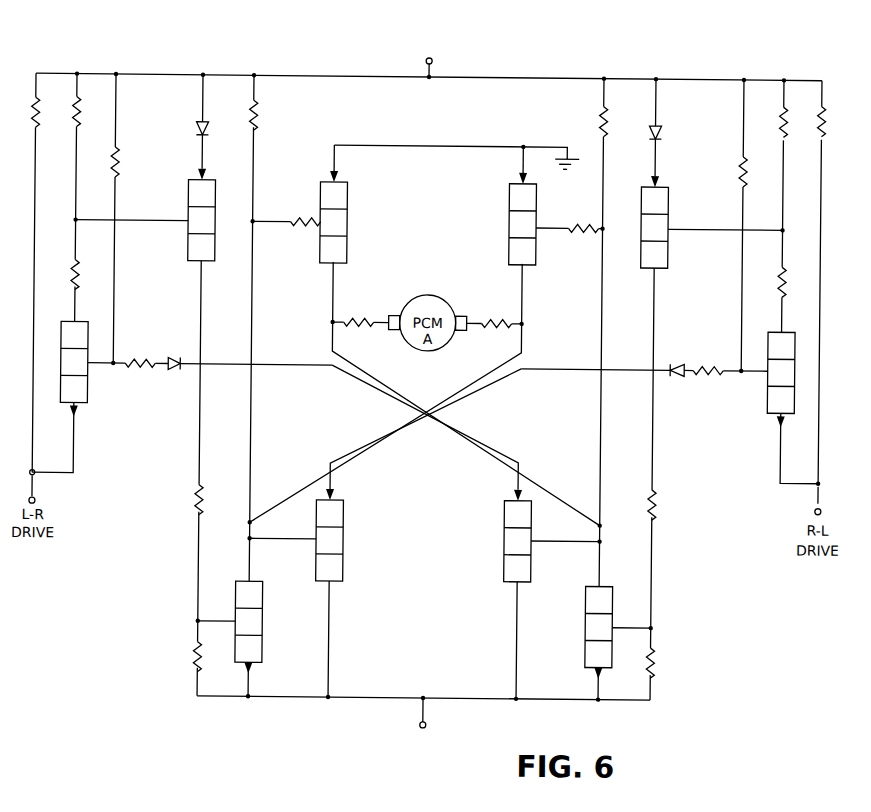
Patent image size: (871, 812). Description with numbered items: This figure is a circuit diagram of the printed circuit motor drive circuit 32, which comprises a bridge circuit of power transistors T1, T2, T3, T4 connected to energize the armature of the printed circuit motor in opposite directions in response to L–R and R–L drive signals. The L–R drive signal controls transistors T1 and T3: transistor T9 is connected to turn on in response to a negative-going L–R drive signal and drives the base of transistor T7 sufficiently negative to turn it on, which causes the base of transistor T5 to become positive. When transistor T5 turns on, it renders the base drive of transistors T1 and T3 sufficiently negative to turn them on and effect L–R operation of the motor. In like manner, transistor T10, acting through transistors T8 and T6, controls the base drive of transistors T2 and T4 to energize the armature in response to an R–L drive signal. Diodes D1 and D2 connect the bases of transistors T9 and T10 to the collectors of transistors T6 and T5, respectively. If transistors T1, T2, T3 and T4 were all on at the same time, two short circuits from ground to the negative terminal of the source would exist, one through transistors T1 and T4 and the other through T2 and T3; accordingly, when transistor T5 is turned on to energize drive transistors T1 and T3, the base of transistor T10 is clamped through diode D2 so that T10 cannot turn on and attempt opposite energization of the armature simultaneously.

The power transistor T1 is at (346, 211).
The power transistor T2 is at (507, 210).
The power transistor T3 is at (345, 529).
The power transistor T4 is at (505, 528).
The transistor T5 is at (265, 624).
The transistor T6 is at (585, 627).
The transistor T7 is at (214, 210).
The transistor T8 is at (667, 213).
The transistor T9 is at (88, 388).
The transistor T10 is at (767, 397).
The diode D1 is at (210, 352).
The diode D2 is at (644, 358).
The printed circuit motor drive circuit 32 is at (134, 650).